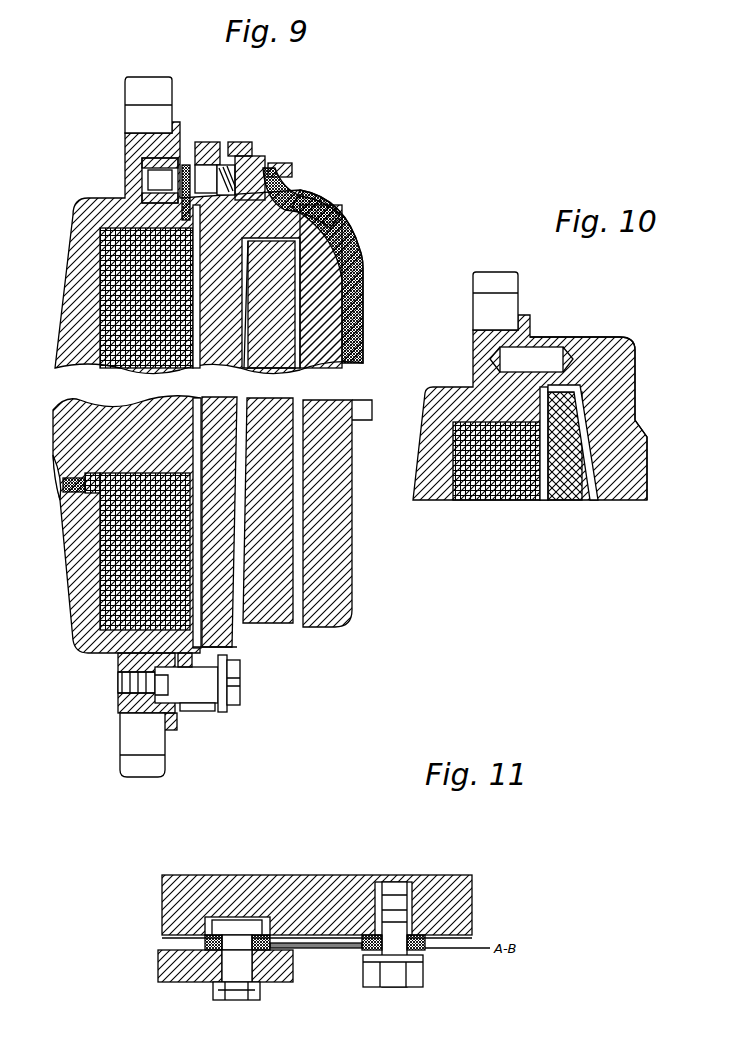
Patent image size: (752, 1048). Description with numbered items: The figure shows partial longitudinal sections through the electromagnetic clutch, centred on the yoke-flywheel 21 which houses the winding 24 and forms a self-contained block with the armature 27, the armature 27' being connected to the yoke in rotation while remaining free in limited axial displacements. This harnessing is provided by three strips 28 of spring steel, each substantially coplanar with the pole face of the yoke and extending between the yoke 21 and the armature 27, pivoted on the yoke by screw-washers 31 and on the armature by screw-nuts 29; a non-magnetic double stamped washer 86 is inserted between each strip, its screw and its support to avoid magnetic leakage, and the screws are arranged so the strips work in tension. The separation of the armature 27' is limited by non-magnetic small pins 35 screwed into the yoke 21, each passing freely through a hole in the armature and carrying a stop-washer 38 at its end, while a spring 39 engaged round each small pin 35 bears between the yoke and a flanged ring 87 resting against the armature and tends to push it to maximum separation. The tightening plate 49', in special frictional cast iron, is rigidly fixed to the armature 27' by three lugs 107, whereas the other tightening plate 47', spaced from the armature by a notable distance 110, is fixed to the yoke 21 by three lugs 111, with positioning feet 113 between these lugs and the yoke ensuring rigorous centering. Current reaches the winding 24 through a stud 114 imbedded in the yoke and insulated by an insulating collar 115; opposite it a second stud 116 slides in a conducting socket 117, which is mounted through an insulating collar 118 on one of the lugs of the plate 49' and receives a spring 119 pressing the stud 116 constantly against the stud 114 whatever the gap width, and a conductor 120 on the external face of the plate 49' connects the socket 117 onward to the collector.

In FIG. 9, the yoke-flywheel 21 is at (82, 220).
In FIG. 10, the yoke-flywheel 21 is at (436, 500).
In FIG. 11, the yoke-flywheel 21 is at (437, 890).
In FIG. 9, the winding 24 is at (120, 295).
In FIG. 10, the winding 24 is at (497, 500).
In FIG. 9, the armature 27 is at (241, 524).
In FIG. 9, the armature 27' is at (211, 426).
In FIG. 10, the armature 27' is at (565, 463).
In FIG. 11, the armature 27' is at (225, 988).
In FIG. 11, the strip 28 is at (333, 950).
In FIG. 11, the screw-nut 29 is at (265, 985).
In FIG. 11, the screw-washer 31 is at (400, 950).
In FIG. 9, the small pin 35 is at (212, 705).
In FIG. 9, the stop-washer 38 is at (236, 706).
In FIG. 9, the spring 39 is at (188, 708).
In FIG. 9, the tightening plate 47' is at (307, 300).
In FIG. 10, the tightening plate 47' is at (657, 440).
In FIG. 9, the tightening plate 49' is at (337, 499).
In FIG. 11, the non-magnetic double stamped washer 86 is at (265, 915).
In FIG. 9, the flanged ring 87 is at (205, 703).
In FIG. 9, the lug 107 is at (298, 195).
In FIG. 9, the distance 110 is at (246, 360).
In FIG. 10, the distance 110 is at (598, 465).
In FIG. 10, the lug 111 is at (600, 340).
In FIG. 10, the positioning foot 113 is at (542, 345).
In FIG. 9, the stud 114 is at (148, 178).
In FIG. 9, the insulating collar 115 is at (142, 160).
In FIG. 9, the second stud 116 is at (207, 170).
In FIG. 9, the conducting socket 117 is at (260, 170).
In FIG. 9, the insulating collar 118 is at (246, 150).
In FIG. 9, the spring 119 is at (228, 175).
In FIG. 9, the conductor 120 is at (348, 238).